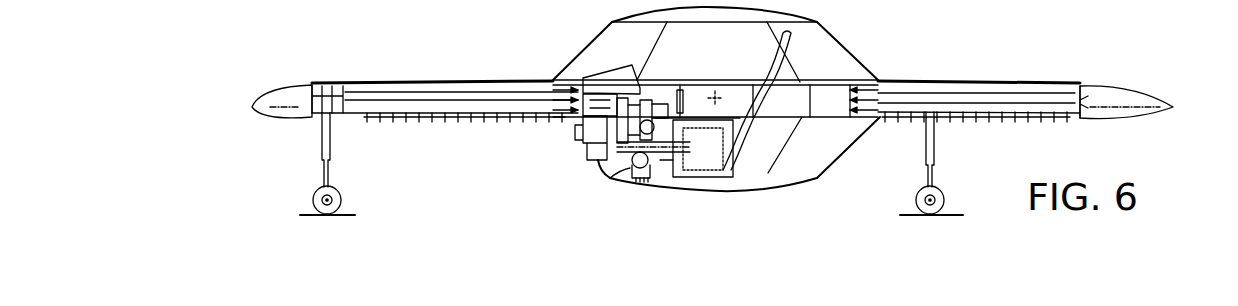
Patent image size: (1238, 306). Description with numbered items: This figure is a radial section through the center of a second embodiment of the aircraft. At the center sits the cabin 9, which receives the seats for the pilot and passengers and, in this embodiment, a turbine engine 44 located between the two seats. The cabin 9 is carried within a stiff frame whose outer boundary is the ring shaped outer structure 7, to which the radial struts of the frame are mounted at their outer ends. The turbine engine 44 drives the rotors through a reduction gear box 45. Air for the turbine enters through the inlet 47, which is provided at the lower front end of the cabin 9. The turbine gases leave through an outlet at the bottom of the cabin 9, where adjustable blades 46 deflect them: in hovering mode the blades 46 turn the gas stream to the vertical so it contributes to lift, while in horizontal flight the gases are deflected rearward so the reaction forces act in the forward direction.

The cabin 9 is at (620, 47).
The ring shaped outer structure 7 is at (1125, 97).
The inlet 47 is at (560, 133).
The reduction gear box 45 is at (575, 140).
The turbine engine 44 is at (580, 162).
The adjustable blades 46 is at (634, 191).